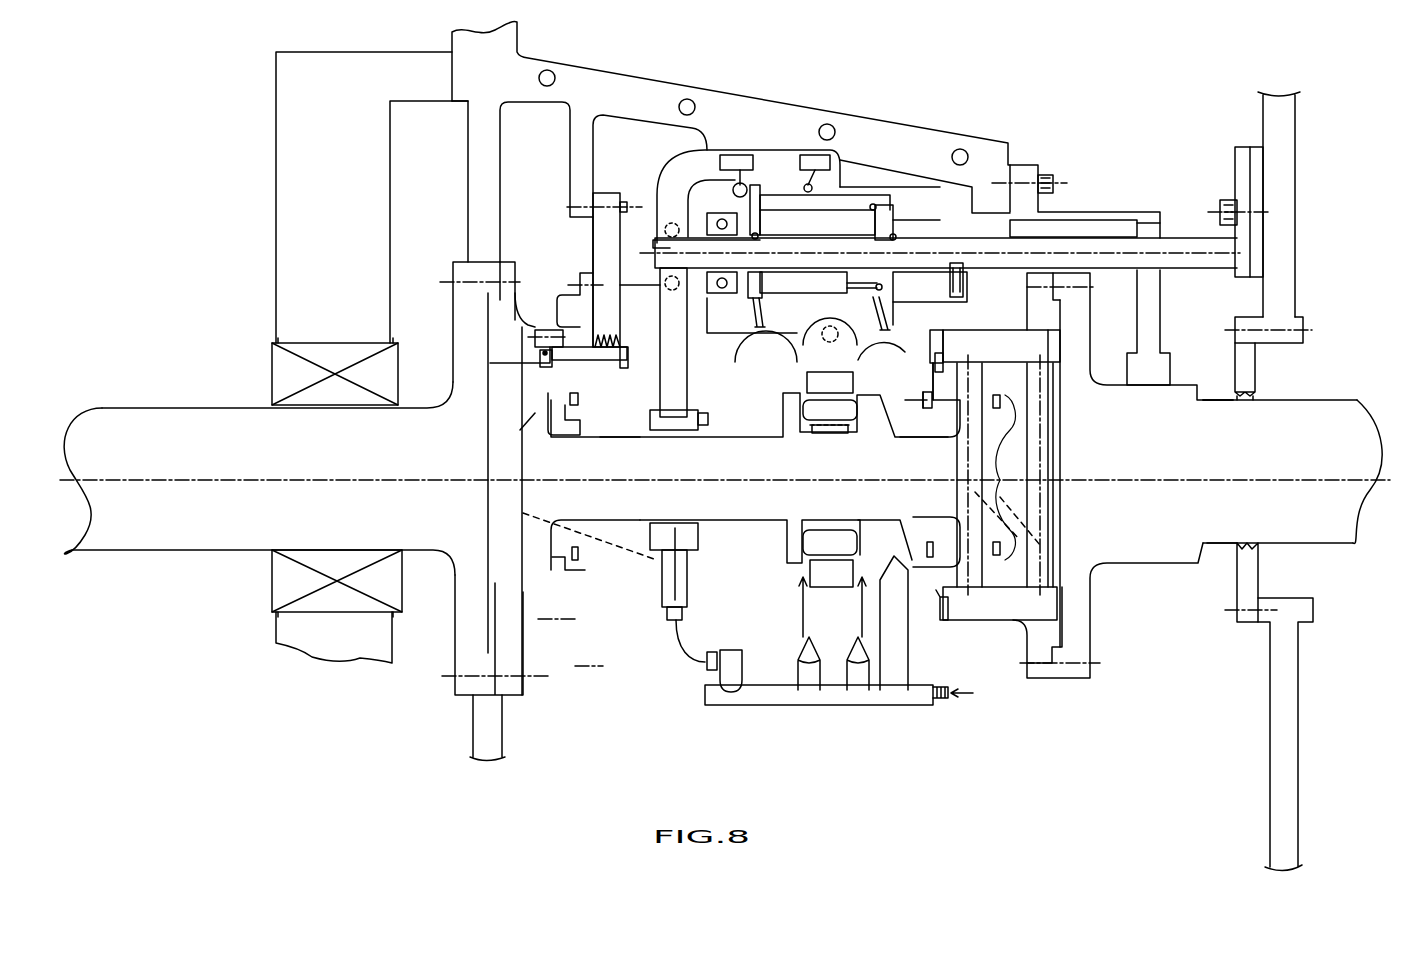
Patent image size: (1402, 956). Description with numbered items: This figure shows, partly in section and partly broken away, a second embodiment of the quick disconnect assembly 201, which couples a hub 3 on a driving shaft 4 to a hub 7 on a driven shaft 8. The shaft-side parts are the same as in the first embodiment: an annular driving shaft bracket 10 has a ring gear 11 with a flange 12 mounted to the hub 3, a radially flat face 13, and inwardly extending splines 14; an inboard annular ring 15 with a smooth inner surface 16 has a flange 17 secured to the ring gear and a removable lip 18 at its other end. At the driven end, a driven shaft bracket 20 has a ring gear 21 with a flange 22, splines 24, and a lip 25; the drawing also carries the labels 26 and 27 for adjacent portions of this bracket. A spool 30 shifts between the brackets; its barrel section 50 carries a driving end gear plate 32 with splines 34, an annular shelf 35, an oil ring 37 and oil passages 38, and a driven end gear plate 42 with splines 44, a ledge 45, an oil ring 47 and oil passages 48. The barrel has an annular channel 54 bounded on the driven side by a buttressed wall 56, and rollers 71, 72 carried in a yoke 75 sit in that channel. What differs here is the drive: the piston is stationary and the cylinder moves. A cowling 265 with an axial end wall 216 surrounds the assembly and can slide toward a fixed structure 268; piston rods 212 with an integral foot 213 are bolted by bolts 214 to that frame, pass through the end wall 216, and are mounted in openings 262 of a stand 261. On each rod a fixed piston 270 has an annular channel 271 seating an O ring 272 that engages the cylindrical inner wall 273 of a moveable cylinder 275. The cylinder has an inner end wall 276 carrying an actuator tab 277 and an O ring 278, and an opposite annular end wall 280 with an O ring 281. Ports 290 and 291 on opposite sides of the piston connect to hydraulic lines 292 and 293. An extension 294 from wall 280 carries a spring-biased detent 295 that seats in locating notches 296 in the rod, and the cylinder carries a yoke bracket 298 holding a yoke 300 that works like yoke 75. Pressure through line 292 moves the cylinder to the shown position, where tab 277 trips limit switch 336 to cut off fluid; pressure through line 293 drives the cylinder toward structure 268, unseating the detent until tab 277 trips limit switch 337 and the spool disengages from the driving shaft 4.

The hub 3 is at (449, 300).
The driving shaft 4 is at (190, 408).
The hub 7 is at (1090, 330).
The driven shaft 8 is at (1300, 430).
The driving shaft bracket 10 is at (520, 293).
The ring gear 11 is at (510, 340).
The flange 12 is at (517, 697).
The radially flat face 13 is at (505, 270).
The splines 14 is at (522, 370).
The inboard annular ring 15 is at (603, 332).
The smooth inner annular surface 16 is at (622, 368).
The radially outwardly extending flange 17 is at (547, 340).
The lip 18 is at (622, 355).
The driven shaft bracket 20 is at (978, 327).
The ring gear 21 is at (965, 340).
The radially outwardly extending flange 22 is at (1036, 629).
The splines 24 is at (1025, 370).
The lip 25 is at (932, 355).
The clutch plate 26 is at (965, 372).
The clutch drum 27 is at (1060, 335).
The spool 30 is at (720, 426).
The driving shaft end gear plate 32 is at (533, 418).
The splines 34 is at (552, 372).
The annular shelf 35 is at (562, 412).
The oil ring 37 is at (580, 553).
The oil passages 38 is at (620, 584).
The driven shaft end gear plate 42 is at (968, 420).
The splines 44 is at (968, 580).
The ledge 45 is at (930, 405).
The oil ring 47 is at (920, 400).
The oil passages 48 is at (975, 512).
The barrel section 50 is at (740, 452).
The annular channel 54 is at (822, 440).
The wall 56 is at (885, 550).
The roller 71 is at (818, 425).
The roller 72 is at (838, 530).
The yoke 75 is at (835, 575).
The quick disconnect assembly 201 is at (1105, 160).
The piston rod 212 is at (1138, 220).
The foot 213 is at (1235, 160).
The bolt 214 is at (1222, 210).
The end wall 216 is at (1145, 303).
The stand 261 is at (675, 388).
The openings 262 is at (665, 240).
The cowling 265 is at (910, 90).
The fixed structure 268 is at (1285, 140).
The fixed piston 270 is at (855, 227).
The annular channel 271 is at (920, 170).
The O ring 272 is at (843, 283).
The cylindrical inner wall 273 is at (791, 222).
The moveable cylinder 275 is at (840, 201).
The inner end wall 276 is at (705, 305).
The actuator tab 277 is at (745, 190).
The O ring 278 is at (777, 283).
The annular end wall 280 is at (895, 203).
The O ring 281 is at (897, 222).
The hydraulic fluid port 290 is at (736, 299).
The hydraulic fluid port 291 is at (946, 253).
The hydraulic fluid line 292 is at (745, 338).
The hydraulic fluid line 293 is at (898, 313).
The extension 294 is at (912, 325).
The spring-biased detent 295 is at (930, 287).
The locating notches 296 is at (958, 262).
The yoke bracket 298 is at (805, 336).
The yoke 300 is at (850, 362).
The limit switch 336 is at (740, 155).
The limit switch 337 is at (822, 150).